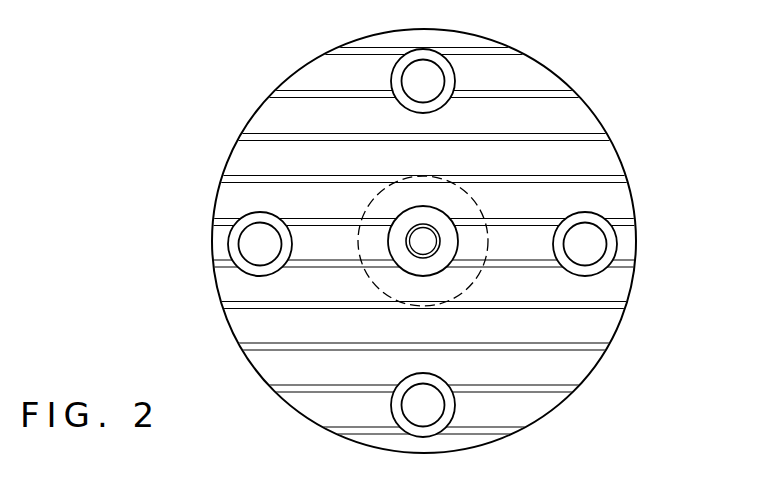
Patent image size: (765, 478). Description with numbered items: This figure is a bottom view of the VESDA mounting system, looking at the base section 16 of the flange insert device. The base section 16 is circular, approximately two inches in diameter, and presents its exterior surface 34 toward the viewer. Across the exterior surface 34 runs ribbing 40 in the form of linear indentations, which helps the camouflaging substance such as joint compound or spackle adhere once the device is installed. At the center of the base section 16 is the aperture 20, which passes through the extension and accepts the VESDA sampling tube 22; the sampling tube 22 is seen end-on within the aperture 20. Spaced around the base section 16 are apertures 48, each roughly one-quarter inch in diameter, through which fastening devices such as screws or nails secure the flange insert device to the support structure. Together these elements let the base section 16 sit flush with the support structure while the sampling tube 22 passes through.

The base section 16 is at (423, 241).
The aperture 20 is at (430, 260).
The VESDA sampling tube 22 is at (420, 244).
The exterior surface 34 is at (273, 360).
The ribbing 40 is at (540, 92).
The apertures 48 is at (250, 243).